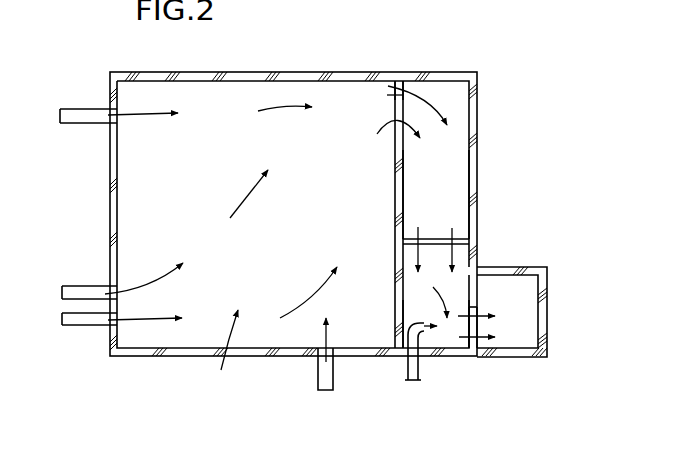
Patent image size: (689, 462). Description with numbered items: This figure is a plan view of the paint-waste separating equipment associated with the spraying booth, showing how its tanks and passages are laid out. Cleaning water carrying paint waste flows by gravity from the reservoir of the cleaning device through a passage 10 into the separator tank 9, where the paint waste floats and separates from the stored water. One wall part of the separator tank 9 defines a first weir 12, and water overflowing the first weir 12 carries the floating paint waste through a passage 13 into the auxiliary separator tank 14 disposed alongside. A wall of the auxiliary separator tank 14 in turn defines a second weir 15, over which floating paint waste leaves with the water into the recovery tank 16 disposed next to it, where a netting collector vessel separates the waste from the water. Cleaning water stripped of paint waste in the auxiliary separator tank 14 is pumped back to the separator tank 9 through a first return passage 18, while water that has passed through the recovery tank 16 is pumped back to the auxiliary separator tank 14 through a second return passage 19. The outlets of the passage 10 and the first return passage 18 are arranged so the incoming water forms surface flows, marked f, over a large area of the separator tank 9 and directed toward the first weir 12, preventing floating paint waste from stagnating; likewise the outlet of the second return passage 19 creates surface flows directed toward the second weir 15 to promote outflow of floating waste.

The separator tank 9 is at (326, 241).
The passage 10 is at (171, 269).
The first return passage 18 is at (70, 124).
The first weir 12 is at (392, 86).
The passage 13 is at (452, 172).
The auxiliary separator tank 14 is at (437, 340).
The second weir 15 is at (463, 348).
The recovery tank 16 is at (520, 316).
The second return passage 19 is at (403, 367).